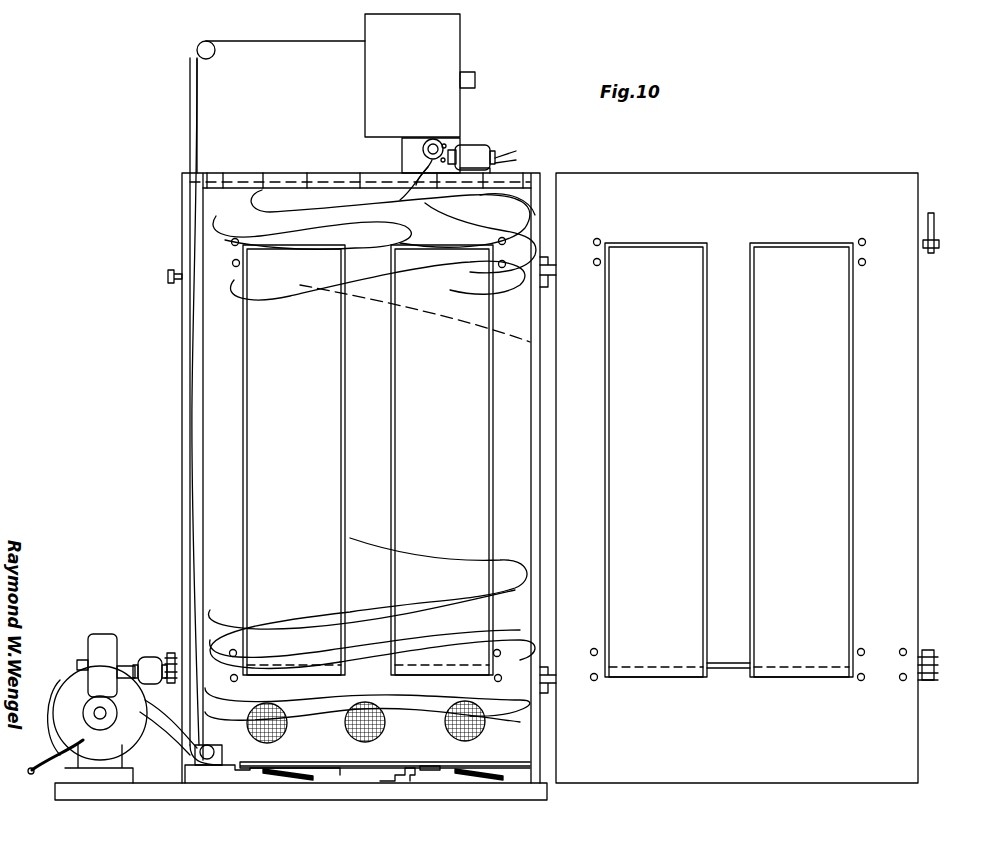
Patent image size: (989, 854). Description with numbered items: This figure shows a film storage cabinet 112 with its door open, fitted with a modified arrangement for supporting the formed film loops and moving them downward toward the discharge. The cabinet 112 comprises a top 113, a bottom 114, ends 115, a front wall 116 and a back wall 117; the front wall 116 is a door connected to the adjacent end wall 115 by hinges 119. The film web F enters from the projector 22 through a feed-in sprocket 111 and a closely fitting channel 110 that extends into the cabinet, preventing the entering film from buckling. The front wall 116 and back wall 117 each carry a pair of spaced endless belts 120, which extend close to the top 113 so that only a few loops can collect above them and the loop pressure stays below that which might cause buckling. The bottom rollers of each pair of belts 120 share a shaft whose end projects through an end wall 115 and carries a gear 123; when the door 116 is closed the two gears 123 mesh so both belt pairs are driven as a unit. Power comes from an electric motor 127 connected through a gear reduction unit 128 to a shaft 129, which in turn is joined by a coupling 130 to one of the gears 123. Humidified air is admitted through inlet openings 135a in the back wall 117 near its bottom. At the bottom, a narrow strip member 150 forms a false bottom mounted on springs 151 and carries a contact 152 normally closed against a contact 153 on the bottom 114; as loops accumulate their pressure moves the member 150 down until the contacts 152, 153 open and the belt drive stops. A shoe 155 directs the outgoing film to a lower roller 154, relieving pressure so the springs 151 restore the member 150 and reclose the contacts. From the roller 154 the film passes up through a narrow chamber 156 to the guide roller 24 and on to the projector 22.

The projector 22 is at (463, 66).
The film guide roller 24 is at (197, 50).
The film web F is at (194, 111).
The channel 110 is at (418, 163).
The feed-in sprocket 111 is at (462, 140).
The cabinet 112 is at (173, 422).
The top 113 is at (248, 175).
The bottom 114 is at (548, 792).
The ends 115 is at (180, 472).
The front wall 116 is at (751, 218).
The back wall 117 is at (382, 455).
The hinges 119 is at (550, 287).
The endless belts 120 is at (306, 416).
The gear 123 is at (170, 652).
The electric motor 127 is at (72, 700).
The gear reduction unit 128 is at (104, 632).
The shaft 129 is at (127, 664).
The coupling 130 is at (147, 668).
The inlet openings 135a is at (520, 728).
The member 150 is at (525, 762).
The springs 151 is at (280, 777).
The contact 152 is at (425, 765).
The contact 153 is at (392, 780).
The lower roller 154 is at (190, 745).
The shoe 155 is at (240, 743).
The narrow chamber 156 is at (190, 292).